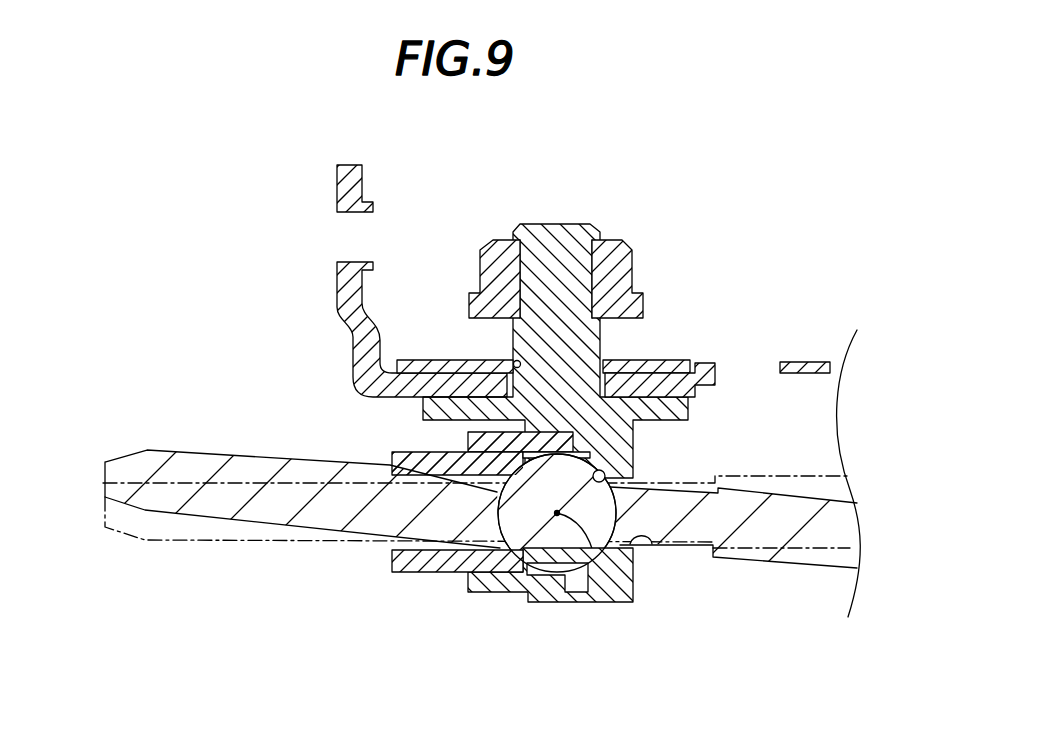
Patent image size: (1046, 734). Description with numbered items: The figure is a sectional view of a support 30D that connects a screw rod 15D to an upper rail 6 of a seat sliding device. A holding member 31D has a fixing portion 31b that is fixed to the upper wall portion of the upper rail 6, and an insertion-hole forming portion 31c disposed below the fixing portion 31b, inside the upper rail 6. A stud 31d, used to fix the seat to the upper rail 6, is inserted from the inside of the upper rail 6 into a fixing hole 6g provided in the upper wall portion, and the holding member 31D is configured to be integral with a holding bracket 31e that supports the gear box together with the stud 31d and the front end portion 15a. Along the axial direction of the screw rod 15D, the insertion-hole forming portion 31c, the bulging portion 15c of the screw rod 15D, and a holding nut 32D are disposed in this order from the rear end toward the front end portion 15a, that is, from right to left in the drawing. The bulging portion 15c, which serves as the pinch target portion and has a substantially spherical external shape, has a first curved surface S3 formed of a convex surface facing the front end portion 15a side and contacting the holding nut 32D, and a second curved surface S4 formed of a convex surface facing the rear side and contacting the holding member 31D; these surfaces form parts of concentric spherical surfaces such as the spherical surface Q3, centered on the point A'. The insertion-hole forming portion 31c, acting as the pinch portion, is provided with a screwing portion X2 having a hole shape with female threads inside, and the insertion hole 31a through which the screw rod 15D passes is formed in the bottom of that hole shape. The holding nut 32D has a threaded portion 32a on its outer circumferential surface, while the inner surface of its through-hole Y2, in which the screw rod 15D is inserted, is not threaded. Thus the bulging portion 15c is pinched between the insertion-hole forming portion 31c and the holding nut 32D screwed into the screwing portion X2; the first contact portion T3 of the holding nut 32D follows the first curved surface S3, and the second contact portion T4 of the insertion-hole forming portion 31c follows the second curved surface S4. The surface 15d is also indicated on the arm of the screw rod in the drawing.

The support 30D is at (760, 209).
The holding member 31D is at (547, 223).
The stud 31d is at (565, 268).
The holding bracket 31e is at (360, 354).
The fixing portion 31b is at (680, 403).
The insertion hole 31a is at (652, 545).
The insertion-hole forming portion 31c is at (613, 595).
The threaded portion 32a is at (600, 423).
The holding nut 32D is at (393, 566).
The upper rail 6 is at (784, 357).
The fixing hole 6g is at (514, 361).
The front end portion 15a is at (125, 476).
The bulging portion 15c is at (550, 548).
The arm surface 15d is at (500, 500).
The screw rod 15D is at (772, 567).
The screwing portion X2 is at (510, 431).
The through-hole Y2 is at (428, 572).
The spherical surface Q3 is at (377, 463).
The first curved surface S3 is at (498, 552).
The first contact portion T3 is at (522, 558).
The second curved surface S4 is at (623, 452).
The second contact portion T4 is at (630, 467).
The point A' is at (635, 568).